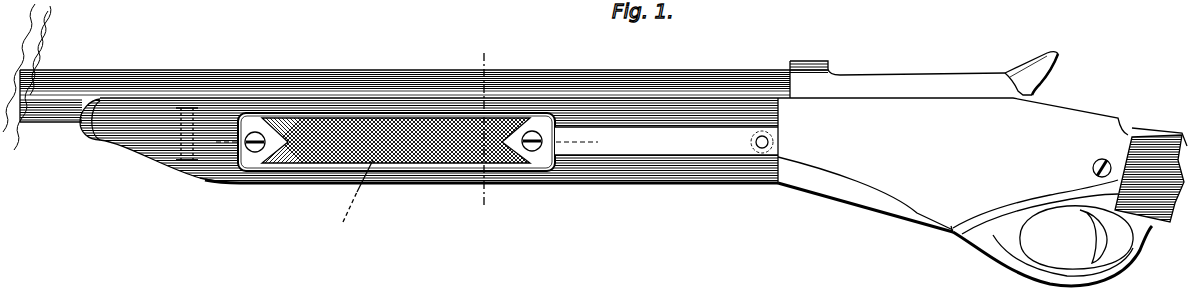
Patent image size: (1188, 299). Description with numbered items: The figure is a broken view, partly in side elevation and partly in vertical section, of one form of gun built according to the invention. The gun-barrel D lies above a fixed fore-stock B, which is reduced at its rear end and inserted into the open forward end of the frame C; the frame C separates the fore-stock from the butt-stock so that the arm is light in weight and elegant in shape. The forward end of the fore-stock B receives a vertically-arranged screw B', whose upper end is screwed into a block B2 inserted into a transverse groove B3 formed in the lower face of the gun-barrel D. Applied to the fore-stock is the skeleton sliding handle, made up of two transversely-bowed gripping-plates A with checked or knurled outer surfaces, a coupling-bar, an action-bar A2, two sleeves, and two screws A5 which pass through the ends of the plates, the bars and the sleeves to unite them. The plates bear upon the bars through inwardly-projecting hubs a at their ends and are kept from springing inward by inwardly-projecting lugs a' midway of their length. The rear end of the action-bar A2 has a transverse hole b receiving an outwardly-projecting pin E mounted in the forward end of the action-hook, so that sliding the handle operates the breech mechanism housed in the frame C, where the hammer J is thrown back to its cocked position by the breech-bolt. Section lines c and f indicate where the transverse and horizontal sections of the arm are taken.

The gun-barrel D is at (266, 80).
The fore-stock B is at (429, 152).
The block B2 is at (172, 148).
The transverse groove B3 is at (182, 98).
The vertically-arranged screw B' is at (186, 180).
The section line c d c is at (403, 142).
The gripping-plates A is at (398, 162).
The screws A5 is at (527, 182).
The action-bar A2 is at (633, 149).
The section line e f is at (582, 142).
The inwardly-projecting lugs a' is at (355, 199).
The inwardly-projecting hubs a is at (483, 129).
The transverse hole b is at (753, 156).
The outwardly-projecting pin E is at (761, 178).
The frame C is at (983, 173).
The hammer J is at (1021, 74).